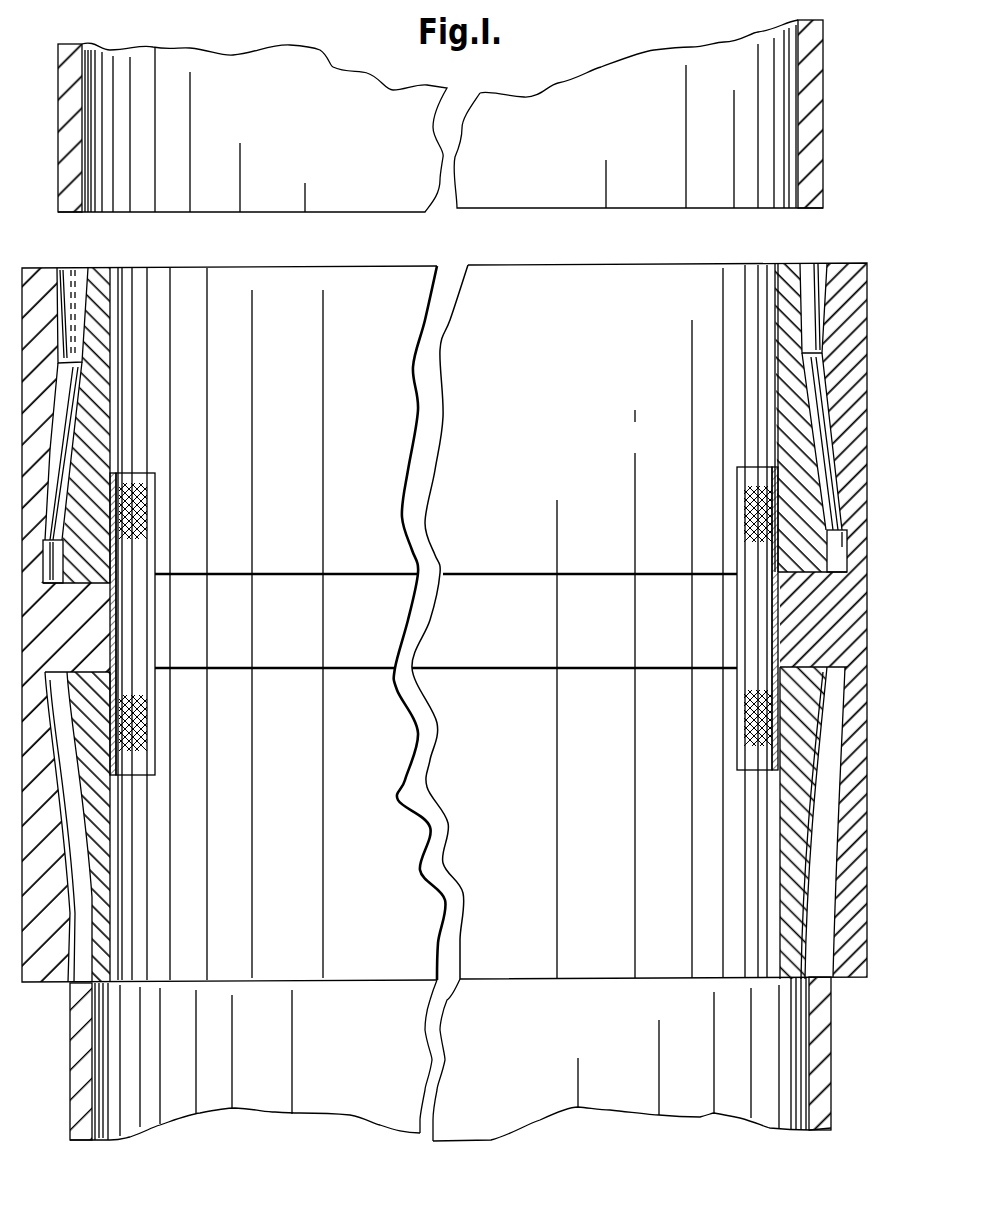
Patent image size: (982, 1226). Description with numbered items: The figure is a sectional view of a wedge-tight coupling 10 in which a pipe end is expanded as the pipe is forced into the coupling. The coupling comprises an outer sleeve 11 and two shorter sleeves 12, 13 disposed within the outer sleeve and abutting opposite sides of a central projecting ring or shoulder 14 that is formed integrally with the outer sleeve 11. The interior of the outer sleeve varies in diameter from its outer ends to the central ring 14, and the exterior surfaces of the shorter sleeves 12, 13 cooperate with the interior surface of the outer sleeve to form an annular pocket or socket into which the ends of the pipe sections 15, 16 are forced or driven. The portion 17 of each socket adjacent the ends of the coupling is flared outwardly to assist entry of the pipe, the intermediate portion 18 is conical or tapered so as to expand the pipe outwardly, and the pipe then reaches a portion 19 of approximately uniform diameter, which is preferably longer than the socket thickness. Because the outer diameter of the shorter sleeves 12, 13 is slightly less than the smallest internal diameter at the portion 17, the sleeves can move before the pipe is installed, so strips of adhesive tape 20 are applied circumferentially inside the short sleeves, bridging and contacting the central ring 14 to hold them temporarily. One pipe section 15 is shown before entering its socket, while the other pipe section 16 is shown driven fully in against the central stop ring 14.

The coupling 10 is at (863, 256).
The outer sleeve 11 is at (853, 503).
The shorter sleeve 12 is at (787, 268).
The shorter sleeve 13 is at (804, 967).
The central projecting ring or shoulder 14 is at (823, 597).
The pipe section 15 is at (813, 147).
The pipe section 16 is at (814, 1073).
The flared portion of annular socket 17 is at (810, 333).
The intermediate portion of socket 18 is at (820, 430).
The uniform-diameter portion of socket 19 is at (830, 555).
The strips of adhesive tape 20 is at (140, 560).